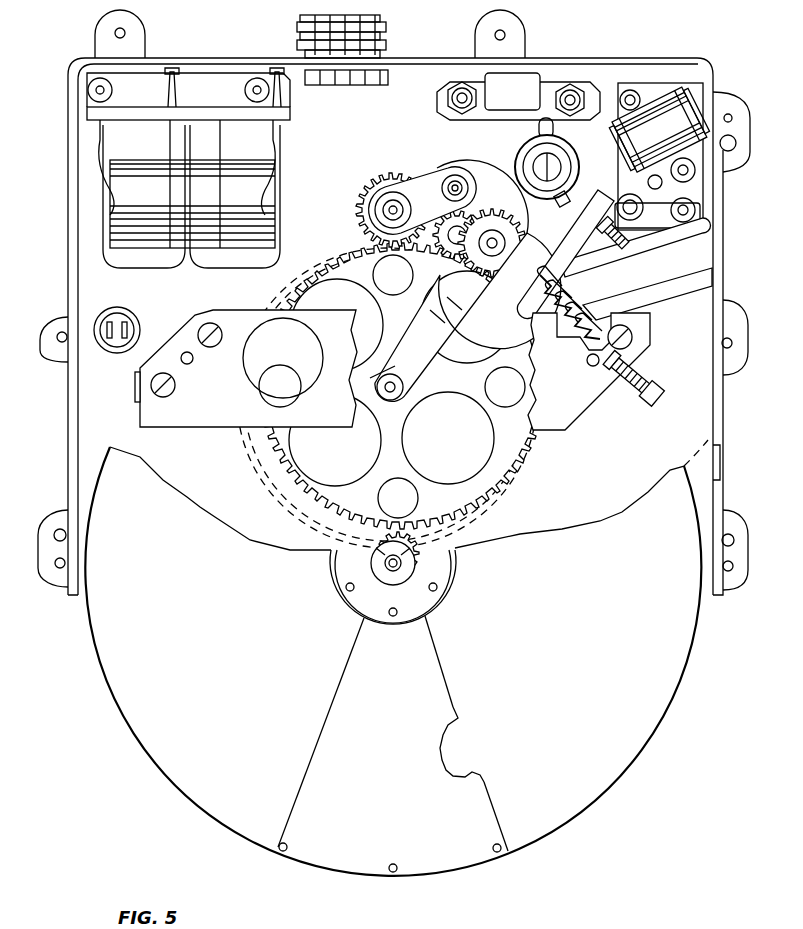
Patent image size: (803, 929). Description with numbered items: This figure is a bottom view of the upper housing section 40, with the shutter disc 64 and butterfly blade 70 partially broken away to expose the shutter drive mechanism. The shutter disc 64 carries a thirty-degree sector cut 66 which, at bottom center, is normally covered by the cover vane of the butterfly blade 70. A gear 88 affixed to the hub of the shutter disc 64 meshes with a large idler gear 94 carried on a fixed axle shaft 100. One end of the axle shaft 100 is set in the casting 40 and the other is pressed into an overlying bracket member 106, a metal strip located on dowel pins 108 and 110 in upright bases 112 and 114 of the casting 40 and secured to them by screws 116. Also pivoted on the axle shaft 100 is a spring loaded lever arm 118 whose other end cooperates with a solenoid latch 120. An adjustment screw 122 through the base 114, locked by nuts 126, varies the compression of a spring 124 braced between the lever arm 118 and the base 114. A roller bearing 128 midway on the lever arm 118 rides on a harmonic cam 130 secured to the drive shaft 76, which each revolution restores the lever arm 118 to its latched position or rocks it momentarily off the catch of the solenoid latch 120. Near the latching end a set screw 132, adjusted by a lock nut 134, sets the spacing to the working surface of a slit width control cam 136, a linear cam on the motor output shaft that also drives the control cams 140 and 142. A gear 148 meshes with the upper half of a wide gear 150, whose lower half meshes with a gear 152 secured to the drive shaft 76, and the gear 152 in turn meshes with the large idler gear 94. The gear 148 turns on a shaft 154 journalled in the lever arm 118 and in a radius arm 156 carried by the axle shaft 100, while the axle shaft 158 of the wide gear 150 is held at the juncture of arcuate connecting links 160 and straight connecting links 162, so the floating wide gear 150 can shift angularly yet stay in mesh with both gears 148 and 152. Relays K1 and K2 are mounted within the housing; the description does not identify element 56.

The upper housing section 40 is at (724, 301).
The receptacle 56 is at (93, 330).
The shutter disc 64 is at (582, 815).
The sector cut 66 is at (448, 765).
The butterfly blade 70 is at (290, 812).
The drive shaft 76 is at (392, 210).
The gear 88 is at (368, 545).
The large idler gear 94 is at (372, 552).
The fixed axle shaft 100 is at (378, 392).
The bracket member 106 is at (580, 417).
The dowel pin 108 is at (187, 360).
The dowel pin 110 is at (655, 403).
The upright base 112 is at (137, 400).
The upright base 114 is at (648, 343).
The screws 116 is at (203, 340).
The lever arm 118 is at (623, 252).
The solenoid latch 120 is at (655, 92).
The adjustment screw 122 is at (660, 400).
The spring 124 is at (593, 300).
The nuts 126 is at (617, 318).
The roller bearing 128 is at (352, 246).
The harmonic cam 130 is at (470, 229).
The set screw 132 is at (622, 232).
The lock nut 134 is at (673, 217).
The slit width control cam 136 is at (565, 150).
The control cam 140 is at (545, 128).
The control cam 142 is at (613, 177).
The gear 148 is at (562, 266).
The wide gear 150 is at (433, 160).
The gear 152 is at (377, 178).
The shaft 154 is at (506, 246).
The radius arm 156 is at (377, 400).
The axle shaft 158 is at (456, 185).
The arcuate connecting links 160 is at (552, 165).
The straight connecting links 162 is at (417, 177).
The relay K1 is at (120, 272).
The relay K2 is at (212, 270).